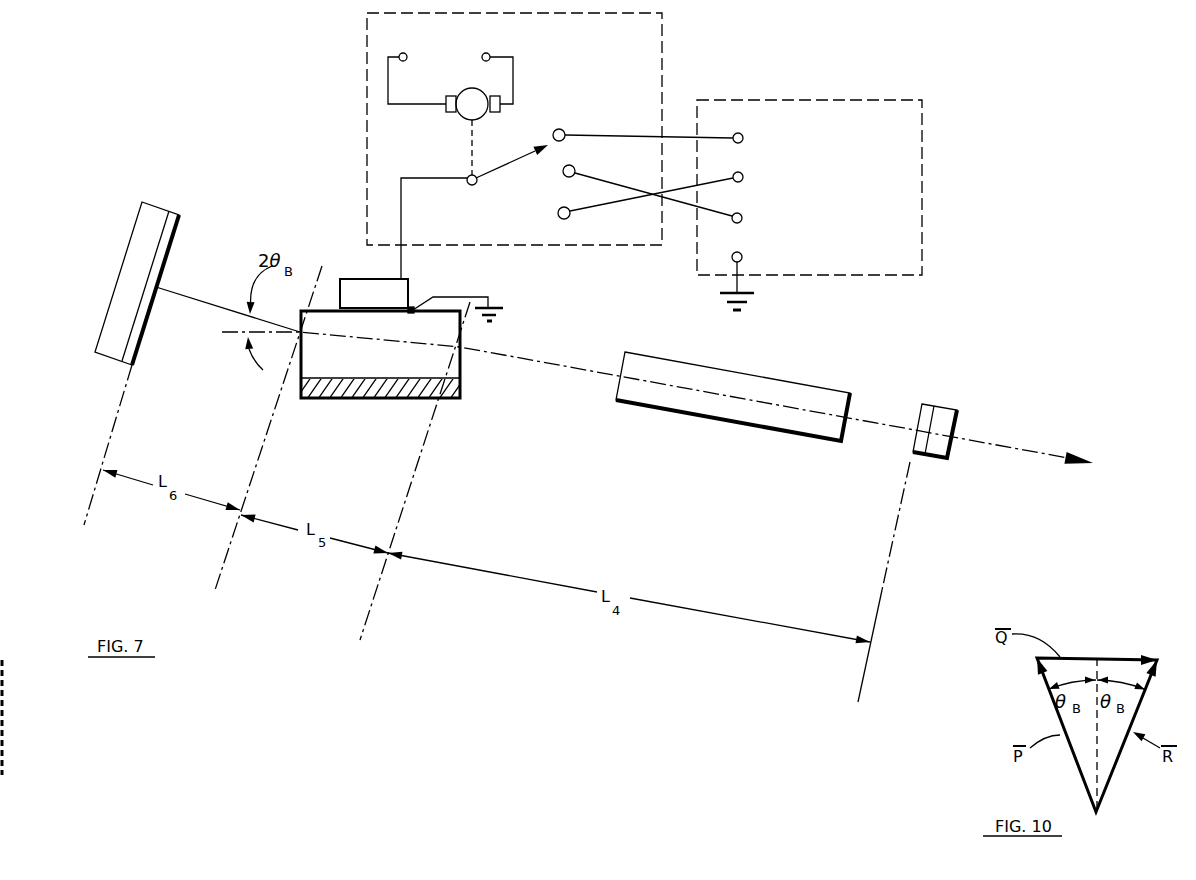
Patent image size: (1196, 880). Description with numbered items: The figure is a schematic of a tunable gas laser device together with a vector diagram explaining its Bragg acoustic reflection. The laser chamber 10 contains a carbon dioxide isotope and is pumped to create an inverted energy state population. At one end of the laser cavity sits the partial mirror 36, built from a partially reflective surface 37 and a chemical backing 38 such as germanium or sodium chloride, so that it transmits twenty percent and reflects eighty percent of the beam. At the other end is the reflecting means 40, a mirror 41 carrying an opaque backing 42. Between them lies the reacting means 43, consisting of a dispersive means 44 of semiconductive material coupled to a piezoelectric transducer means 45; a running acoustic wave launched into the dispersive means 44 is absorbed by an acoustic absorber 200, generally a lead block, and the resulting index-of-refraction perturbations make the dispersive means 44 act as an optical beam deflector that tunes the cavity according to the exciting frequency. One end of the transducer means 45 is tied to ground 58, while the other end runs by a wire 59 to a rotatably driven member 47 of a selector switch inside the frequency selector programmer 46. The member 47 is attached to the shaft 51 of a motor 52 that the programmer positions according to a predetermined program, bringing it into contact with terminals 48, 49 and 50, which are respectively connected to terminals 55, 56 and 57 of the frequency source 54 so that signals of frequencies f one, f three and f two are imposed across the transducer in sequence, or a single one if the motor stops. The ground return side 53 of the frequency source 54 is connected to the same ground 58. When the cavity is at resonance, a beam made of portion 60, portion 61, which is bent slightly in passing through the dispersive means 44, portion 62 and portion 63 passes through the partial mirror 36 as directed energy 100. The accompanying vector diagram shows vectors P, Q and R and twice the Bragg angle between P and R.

The laser chamber 10 is at (715, 406).
The partial mirror 36 is at (972, 428).
The partially reflective surface 37 is at (923, 438).
The chemical backing 38 is at (938, 446).
The reflecting means 40 is at (134, 266).
The mirror 41 is at (157, 273).
The opaque backing 42 is at (142, 272).
The reacting means 43 is at (400, 385).
The dispersive means 44 is at (432, 333).
The transducer means 45 is at (388, 279).
The frequency selector programmer 46 is at (683, 37).
The rotatably driven member 47 is at (468, 186).
The terminal 48 is at (565, 141).
The terminal 49 is at (576, 169).
The terminal 50 is at (568, 219).
The shaft 51 is at (482, 141).
The motor 52 is at (460, 118).
The ground return side 53 is at (743, 257).
The frequency source 54 is at (874, 288).
The terminal 55 is at (738, 133).
The terminal 56 is at (733, 222).
The terminal 57 is at (734, 173).
The ground 58 is at (504, 306).
The wire 59 is at (403, 231).
The beam portion 60 is at (550, 362).
The beam portion 61 is at (365, 337).
The beam portion 62 is at (198, 306).
The beam portion 63 is at (877, 425).
The directed energy 100 is at (1066, 466).
The acoustic absorber 200 is at (402, 398).